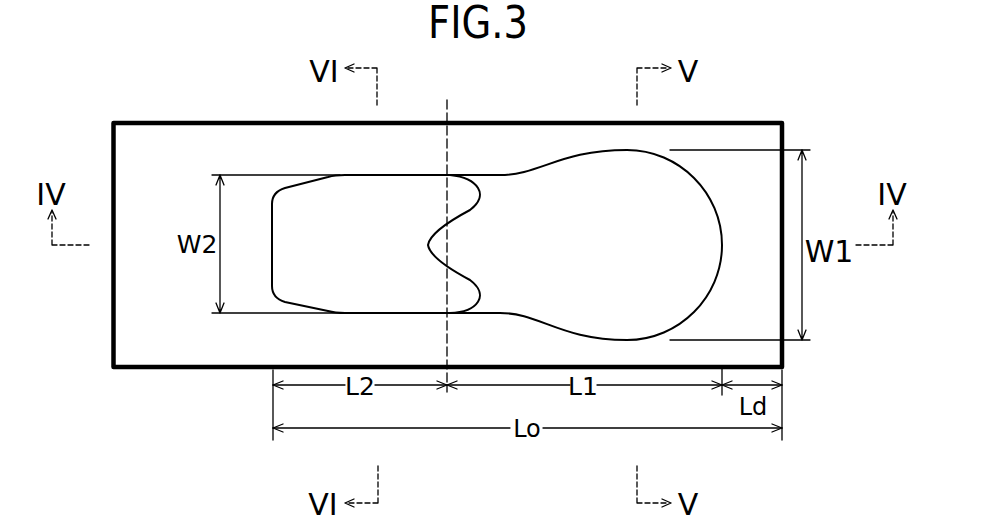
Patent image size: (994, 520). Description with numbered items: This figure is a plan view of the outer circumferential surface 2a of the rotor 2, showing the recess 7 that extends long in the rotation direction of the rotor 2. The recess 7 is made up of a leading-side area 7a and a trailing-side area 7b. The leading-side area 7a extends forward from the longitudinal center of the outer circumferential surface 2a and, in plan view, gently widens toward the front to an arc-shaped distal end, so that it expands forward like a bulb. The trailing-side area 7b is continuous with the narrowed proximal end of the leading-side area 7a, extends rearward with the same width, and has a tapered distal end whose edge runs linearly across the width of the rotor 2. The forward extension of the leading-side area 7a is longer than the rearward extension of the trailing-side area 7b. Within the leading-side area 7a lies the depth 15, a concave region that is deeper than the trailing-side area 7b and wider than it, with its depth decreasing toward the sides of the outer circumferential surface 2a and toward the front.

The rotor 2 is at (749, 123).
The outer circumferential surface 2a is at (200, 135).
The recess 7 is at (430, 180).
The leading-side area 7a is at (539, 196).
The trailing-side area 7b is at (308, 197).
The depth 15 is at (650, 233).